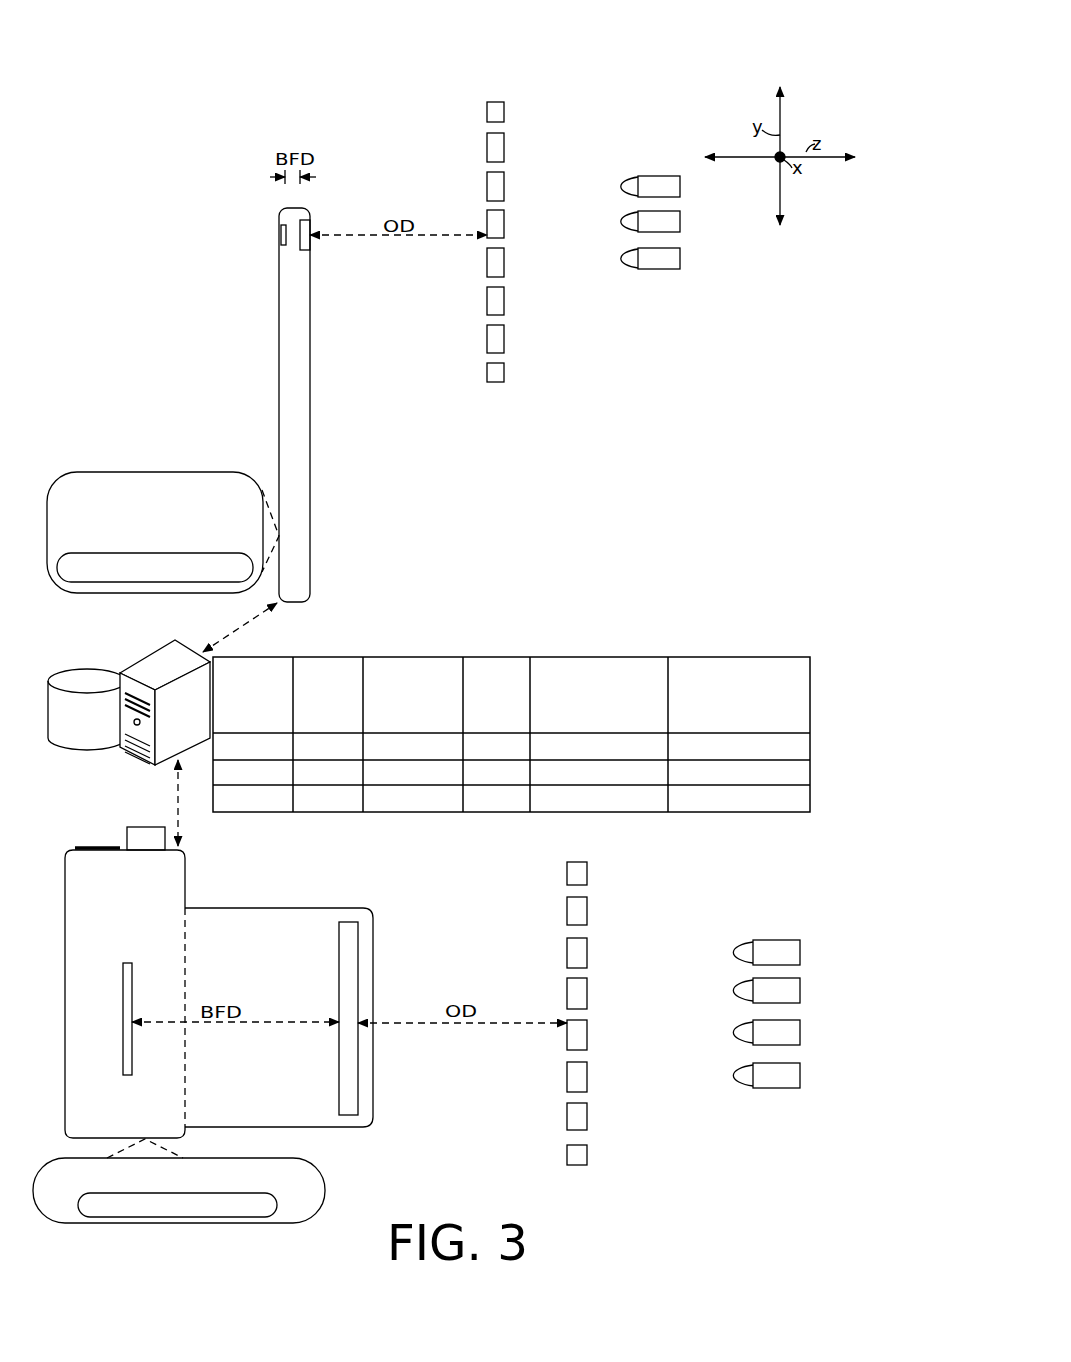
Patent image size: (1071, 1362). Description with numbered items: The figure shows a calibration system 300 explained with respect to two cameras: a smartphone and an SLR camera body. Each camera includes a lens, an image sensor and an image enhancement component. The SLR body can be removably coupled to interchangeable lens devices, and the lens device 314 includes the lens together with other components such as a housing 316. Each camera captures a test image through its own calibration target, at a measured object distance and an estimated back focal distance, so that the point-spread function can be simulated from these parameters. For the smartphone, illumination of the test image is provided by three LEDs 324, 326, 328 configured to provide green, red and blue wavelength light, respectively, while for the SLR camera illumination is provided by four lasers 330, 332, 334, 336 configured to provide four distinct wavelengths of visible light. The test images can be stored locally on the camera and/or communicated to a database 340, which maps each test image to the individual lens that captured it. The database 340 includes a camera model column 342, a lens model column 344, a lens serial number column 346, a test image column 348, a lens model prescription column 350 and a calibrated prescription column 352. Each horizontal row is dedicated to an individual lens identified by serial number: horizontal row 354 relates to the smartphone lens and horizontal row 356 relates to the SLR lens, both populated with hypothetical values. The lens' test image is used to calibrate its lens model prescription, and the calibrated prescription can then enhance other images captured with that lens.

The calibration system 300 is at (436, 21).
The LED 324 is at (681, 186).
The LED 326 is at (681, 221).
The LED 328 is at (681, 259).
The database 340 is at (173, 645).
The camera model column 342 is at (254, 733).
The lens model column 344 is at (328, 722).
The lens serial number column 346 is at (413, 722).
The test image column 348 is at (497, 722).
The lens model prescription column 350 is at (600, 722).
The calibrated prescription column 352 is at (740, 722).
The horizontal row 354 is at (811, 748).
The horizontal row 356 is at (811, 773).
The lens device 314 is at (270, 906).
The housing 316 is at (370, 1127).
The laser 330 is at (801, 952).
The laser 332 is at (801, 990).
The laser 334 is at (801, 1032).
The laser 336 is at (801, 1075).